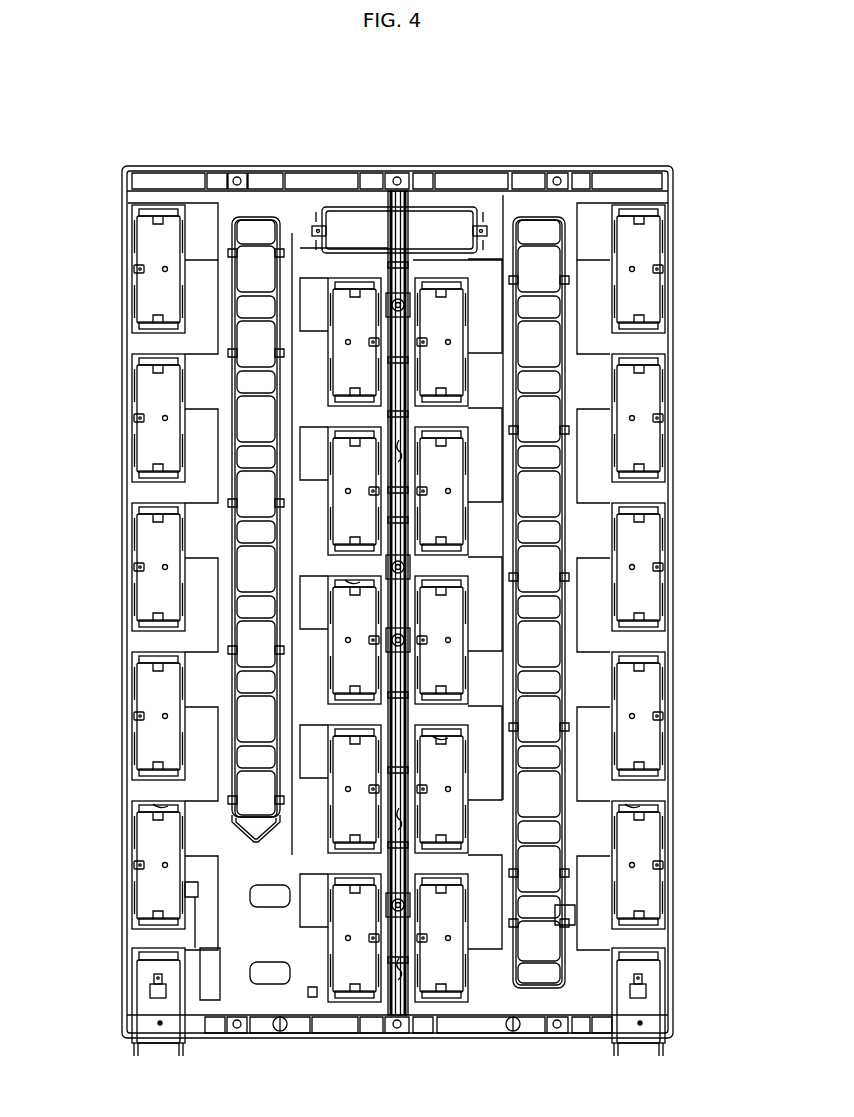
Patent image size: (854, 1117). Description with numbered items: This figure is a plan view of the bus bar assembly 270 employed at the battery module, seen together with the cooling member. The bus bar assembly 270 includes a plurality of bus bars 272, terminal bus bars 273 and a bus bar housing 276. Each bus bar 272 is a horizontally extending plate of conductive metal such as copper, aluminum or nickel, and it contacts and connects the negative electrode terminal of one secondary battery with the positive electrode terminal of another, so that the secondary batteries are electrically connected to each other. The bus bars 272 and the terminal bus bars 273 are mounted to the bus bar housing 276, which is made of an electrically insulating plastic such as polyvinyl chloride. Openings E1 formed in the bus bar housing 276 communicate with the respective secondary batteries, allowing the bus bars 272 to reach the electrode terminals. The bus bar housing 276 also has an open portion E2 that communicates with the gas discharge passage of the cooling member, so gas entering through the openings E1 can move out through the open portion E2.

The bus bar assembly 270 is at (112, 138).
The bus bar 272 is at (425, 226).
The terminal bus bar 273 is at (148, 1030).
The bus bar housing 276 is at (299, 167).
The opening E1 is at (352, 582).
The open portion E2 is at (400, 452).